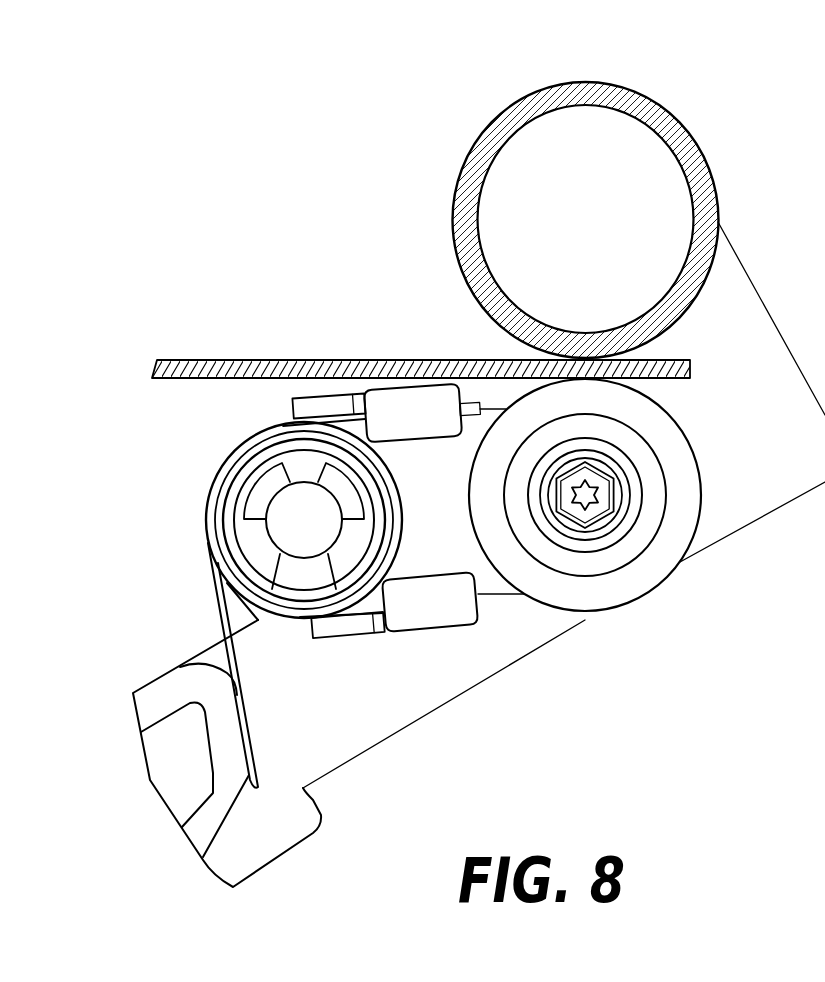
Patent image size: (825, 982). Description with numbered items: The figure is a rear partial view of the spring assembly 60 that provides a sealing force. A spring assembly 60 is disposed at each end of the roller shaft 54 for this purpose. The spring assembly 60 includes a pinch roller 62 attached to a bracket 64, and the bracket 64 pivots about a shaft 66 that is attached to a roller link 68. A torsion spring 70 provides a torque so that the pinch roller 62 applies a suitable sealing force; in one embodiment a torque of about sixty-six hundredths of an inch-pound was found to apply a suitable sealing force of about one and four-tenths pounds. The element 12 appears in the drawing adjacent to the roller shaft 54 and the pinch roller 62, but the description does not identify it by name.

The platen / guide plate 12 is at (224, 359).
The roller shaft 54 is at (516, 100).
The spring assembly 60 is at (249, 517).
The pinch roller 62 is at (656, 590).
The bracket 64 is at (440, 631).
The shaft 66 is at (258, 482).
The roller link 68 is at (153, 687).
The torsion spring 70 is at (207, 542).